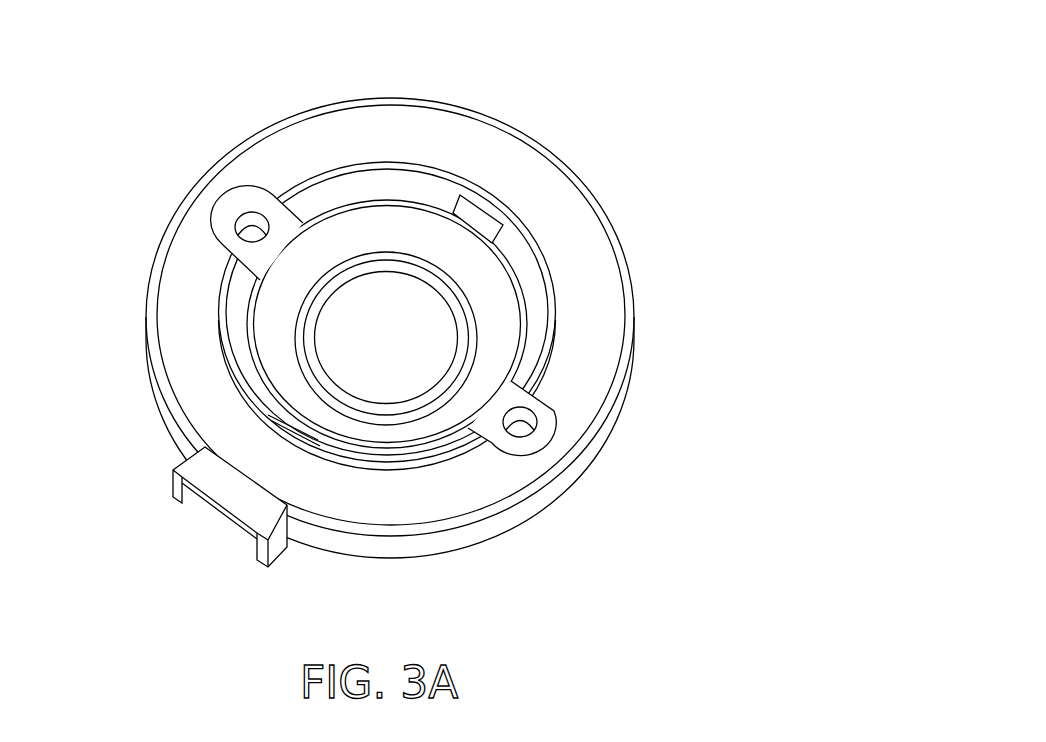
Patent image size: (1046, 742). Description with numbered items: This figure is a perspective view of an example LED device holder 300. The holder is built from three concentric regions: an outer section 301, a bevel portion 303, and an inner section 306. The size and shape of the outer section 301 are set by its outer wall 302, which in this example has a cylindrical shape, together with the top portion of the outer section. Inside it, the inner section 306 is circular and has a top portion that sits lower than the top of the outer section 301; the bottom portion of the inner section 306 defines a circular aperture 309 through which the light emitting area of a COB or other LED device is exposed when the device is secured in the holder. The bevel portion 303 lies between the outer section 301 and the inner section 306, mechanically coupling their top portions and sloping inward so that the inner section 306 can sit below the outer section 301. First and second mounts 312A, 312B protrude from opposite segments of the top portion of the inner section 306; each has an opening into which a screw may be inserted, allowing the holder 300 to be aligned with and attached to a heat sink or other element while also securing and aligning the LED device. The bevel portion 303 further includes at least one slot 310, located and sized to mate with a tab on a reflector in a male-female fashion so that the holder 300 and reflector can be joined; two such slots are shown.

The LED device holder 300 is at (578, 68).
The outer section 301 is at (568, 241).
The outer wall 302 is at (637, 308).
The bevel portion 303 is at (330, 196).
The inner section 306 is at (457, 248).
The aperture 309 is at (358, 342).
The slot 310 is at (264, 412).
The first mount 312A is at (547, 407).
The second mount 312B is at (250, 219).